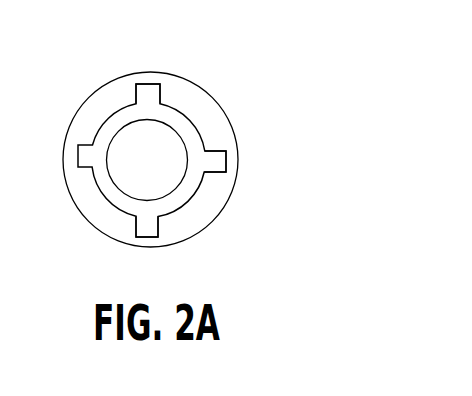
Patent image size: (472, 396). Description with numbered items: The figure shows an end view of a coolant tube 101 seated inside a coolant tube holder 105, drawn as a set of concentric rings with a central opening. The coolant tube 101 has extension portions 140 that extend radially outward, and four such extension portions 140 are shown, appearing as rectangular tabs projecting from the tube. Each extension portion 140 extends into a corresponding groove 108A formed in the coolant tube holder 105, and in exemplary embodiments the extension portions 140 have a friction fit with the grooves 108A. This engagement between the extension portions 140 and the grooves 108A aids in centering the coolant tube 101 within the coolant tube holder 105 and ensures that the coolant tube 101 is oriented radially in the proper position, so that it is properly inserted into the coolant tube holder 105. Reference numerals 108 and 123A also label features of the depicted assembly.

The coolant tube 101 is at (112, 127).
The coolant tube holder 105 is at (202, 86).
The ring member 108 is at (178, 198).
The groove 108A is at (135, 233).
The top tab of ring member 123A is at (193, 196).
The extension portion 140 is at (226, 161).